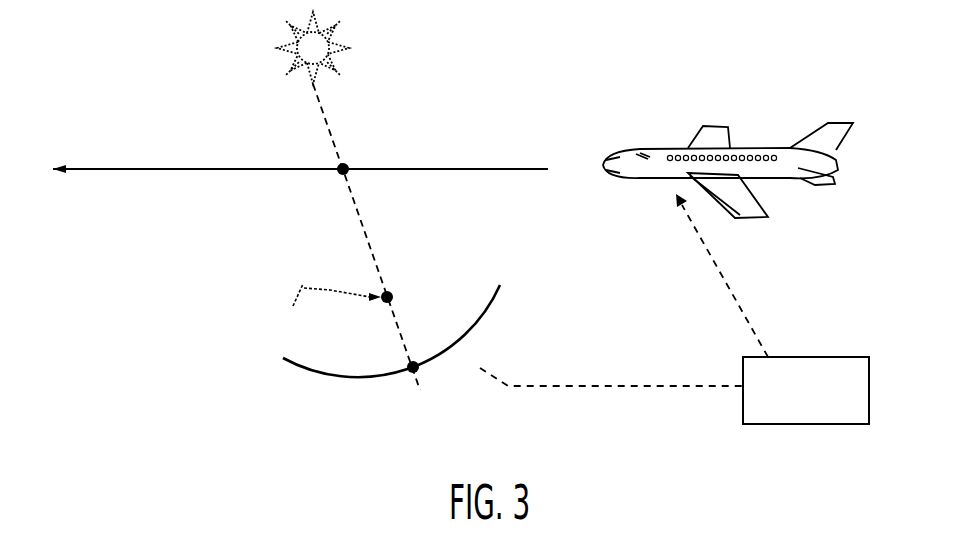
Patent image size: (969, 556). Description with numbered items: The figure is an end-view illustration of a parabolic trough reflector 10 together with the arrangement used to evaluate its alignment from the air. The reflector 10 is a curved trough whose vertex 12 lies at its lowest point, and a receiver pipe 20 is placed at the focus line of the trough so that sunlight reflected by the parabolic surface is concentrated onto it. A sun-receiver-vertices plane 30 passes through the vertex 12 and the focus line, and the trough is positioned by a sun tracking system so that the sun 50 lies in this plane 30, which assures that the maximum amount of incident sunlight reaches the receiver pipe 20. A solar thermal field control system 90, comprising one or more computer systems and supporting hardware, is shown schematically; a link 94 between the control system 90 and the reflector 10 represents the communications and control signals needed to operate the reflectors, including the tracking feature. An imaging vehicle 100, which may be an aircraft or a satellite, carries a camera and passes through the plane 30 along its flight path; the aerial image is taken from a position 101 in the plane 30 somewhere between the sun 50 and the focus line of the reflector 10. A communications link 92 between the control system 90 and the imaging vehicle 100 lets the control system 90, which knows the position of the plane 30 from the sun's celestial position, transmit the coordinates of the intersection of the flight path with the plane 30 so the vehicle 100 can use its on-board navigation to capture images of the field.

The parabolic trough reflector 10 is at (482, 312).
The vertex 12 is at (408, 379).
The receiver pipe 20 is at (394, 291).
The sun-receiver-vertices plane 30 is at (312, 104).
The sun 50 is at (349, 48).
The solar thermal field control system 90 is at (816, 404).
The communications link 92 is at (733, 285).
The link 94 is at (617, 388).
The imaging vehicle 100 is at (657, 146).
The position 101 is at (336, 177).